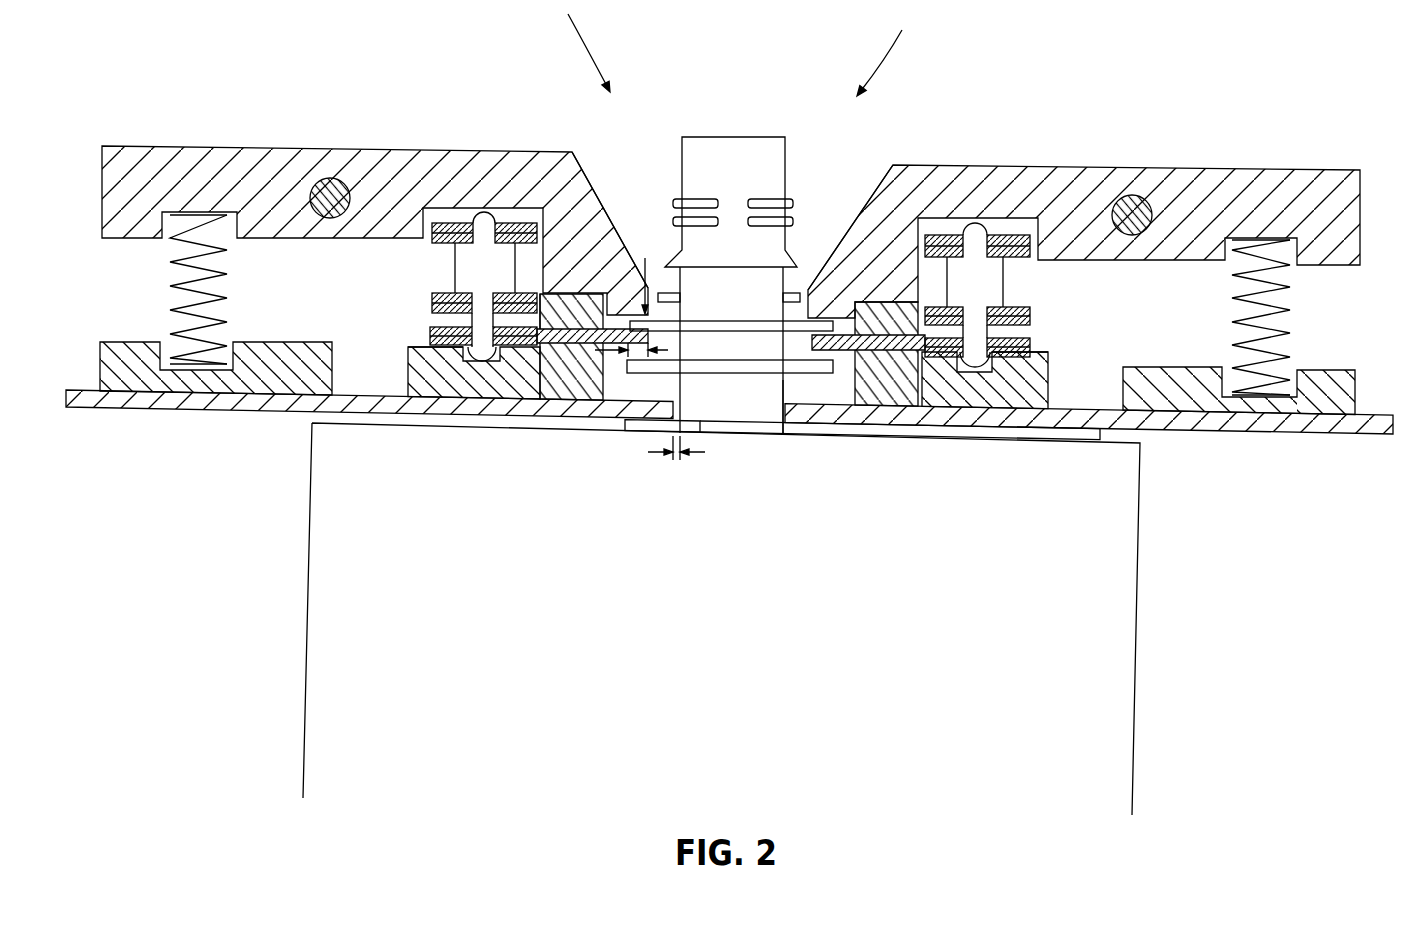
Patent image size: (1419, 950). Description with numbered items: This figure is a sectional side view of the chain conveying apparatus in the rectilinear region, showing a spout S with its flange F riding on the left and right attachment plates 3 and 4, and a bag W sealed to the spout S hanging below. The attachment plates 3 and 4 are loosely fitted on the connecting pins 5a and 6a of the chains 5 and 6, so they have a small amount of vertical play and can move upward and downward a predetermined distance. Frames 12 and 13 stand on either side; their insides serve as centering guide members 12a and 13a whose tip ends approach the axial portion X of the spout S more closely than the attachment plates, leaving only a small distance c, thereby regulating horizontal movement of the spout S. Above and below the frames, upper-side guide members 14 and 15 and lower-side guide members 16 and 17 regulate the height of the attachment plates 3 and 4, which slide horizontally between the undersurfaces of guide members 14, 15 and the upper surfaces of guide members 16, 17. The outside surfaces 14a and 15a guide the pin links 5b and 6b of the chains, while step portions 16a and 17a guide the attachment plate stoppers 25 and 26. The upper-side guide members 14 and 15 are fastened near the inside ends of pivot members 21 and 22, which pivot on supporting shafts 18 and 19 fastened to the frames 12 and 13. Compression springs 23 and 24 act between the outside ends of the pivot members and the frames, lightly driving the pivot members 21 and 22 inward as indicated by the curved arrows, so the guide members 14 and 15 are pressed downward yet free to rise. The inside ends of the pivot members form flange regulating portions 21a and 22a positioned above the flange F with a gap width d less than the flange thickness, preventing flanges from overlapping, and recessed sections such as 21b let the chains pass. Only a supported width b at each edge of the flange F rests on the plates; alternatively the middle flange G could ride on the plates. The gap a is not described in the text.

The attachment plate 3 is at (560, 343).
The attachment plate 4 is at (883, 383).
The chain 5 is at (395, 265).
The connecting pin 5a is at (478, 320).
The pin link 5b is at (432, 300).
The chain 6 is at (1052, 275).
The connecting pin 6a is at (980, 330).
The pin link 6b is at (1030, 312).
The frame 12 is at (215, 400).
The centering guide member 12a is at (655, 425).
The frame 13 is at (1318, 425).
The centering guide member 13a is at (807, 413).
The upper-side guide member 14 is at (570, 302).
The outside surface 14a is at (514, 300).
The upper-side guide member 15 is at (898, 302).
The outside surface 15a is at (938, 310).
The lower-side guide member 16 is at (580, 390).
The step portion 16a is at (520, 347).
The lower-side guide member 17 is at (865, 393).
The step portion 17a is at (943, 367).
The supporting shaft 18 is at (325, 180).
The supporting shaft 19 is at (1135, 198).
The pivot member 21 is at (385, 172).
The flange regulating portion 21a is at (623, 288).
The recessed section 21b is at (510, 216).
The pivot member 22 is at (1068, 175).
The flange regulating portion 22a is at (823, 290).
The compression spring 23 is at (190, 292).
The compression spring 24 is at (1270, 320).
The attachment plate stopper 25 is at (432, 343).
The attachment plate stopper 26 is at (1030, 352).
The spout S is at (775, 125).
The flange F is at (722, 330).
The middle flange G is at (708, 373).
The axial portion X is at (745, 412).
The bag W is at (1150, 531).
The gap a is at (936, 382).
The supported width b is at (622, 354).
The distance of the gap c is at (679, 451).
The width of the gap d is at (643, 275).